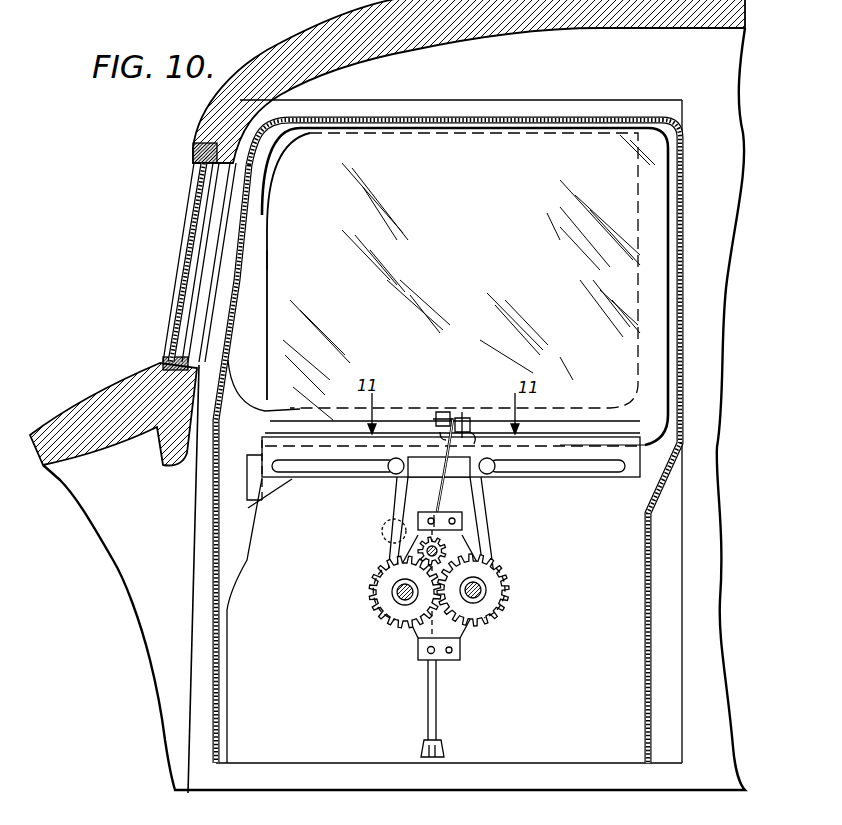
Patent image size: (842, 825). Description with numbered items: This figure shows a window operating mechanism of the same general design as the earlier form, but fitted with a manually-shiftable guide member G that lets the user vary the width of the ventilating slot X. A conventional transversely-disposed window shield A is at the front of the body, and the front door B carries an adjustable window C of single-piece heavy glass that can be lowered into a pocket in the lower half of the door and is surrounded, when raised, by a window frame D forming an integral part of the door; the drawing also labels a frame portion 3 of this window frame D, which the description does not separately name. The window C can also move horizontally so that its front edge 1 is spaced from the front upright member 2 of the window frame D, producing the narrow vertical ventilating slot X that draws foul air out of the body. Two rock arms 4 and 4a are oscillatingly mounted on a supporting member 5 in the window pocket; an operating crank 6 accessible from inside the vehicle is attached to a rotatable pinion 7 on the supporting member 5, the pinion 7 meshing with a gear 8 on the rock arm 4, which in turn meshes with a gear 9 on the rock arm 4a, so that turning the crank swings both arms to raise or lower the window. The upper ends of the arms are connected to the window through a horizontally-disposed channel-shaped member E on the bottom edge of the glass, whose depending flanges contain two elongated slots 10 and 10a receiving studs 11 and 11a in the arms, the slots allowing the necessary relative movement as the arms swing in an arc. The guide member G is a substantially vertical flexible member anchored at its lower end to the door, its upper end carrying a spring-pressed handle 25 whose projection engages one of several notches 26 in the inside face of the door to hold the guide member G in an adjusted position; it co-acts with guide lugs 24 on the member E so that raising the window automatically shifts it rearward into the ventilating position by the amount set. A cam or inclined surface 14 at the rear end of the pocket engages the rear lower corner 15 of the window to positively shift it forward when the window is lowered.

The window shield A is at (193, 228).
The front door B is at (203, 573).
The adjustable window C is at (451, 153).
The window frame D is at (600, 115).
The horizontally-disposed member E is at (567, 437).
The shiftable guide member G is at (437, 481).
The ventilating slot X is at (276, 259).
The front edge 1 is at (268, 300).
The front upright member 2 is at (233, 306).
The window frame 3 is at (678, 313).
The rock arm 4 is at (398, 502).
The rock arm 4a is at (477, 517).
The supporting member 5 is at (460, 631).
The operating crank 6 is at (382, 529).
The pinion 7 is at (470, 544).
The gear 8 is at (372, 601).
The gear 9 is at (508, 598).
The elongated slot 10 is at (315, 467).
The elongated slot 10a is at (560, 467).
The stud 11 is at (387, 467).
The stud 11a is at (492, 467).
The cam surface 14 is at (660, 493).
The rear lower corner 15 is at (653, 438).
The guide lugs 24 is at (437, 447).
The handle 25 is at (462, 420).
The notches 26 is at (443, 412).